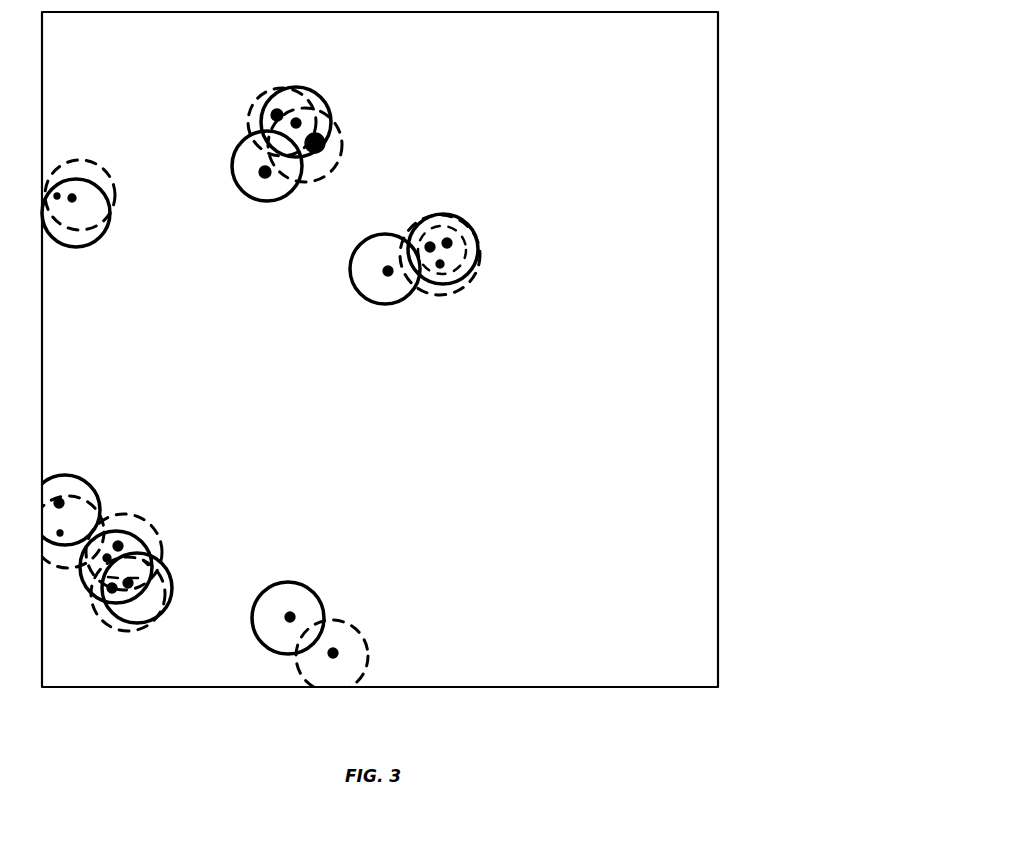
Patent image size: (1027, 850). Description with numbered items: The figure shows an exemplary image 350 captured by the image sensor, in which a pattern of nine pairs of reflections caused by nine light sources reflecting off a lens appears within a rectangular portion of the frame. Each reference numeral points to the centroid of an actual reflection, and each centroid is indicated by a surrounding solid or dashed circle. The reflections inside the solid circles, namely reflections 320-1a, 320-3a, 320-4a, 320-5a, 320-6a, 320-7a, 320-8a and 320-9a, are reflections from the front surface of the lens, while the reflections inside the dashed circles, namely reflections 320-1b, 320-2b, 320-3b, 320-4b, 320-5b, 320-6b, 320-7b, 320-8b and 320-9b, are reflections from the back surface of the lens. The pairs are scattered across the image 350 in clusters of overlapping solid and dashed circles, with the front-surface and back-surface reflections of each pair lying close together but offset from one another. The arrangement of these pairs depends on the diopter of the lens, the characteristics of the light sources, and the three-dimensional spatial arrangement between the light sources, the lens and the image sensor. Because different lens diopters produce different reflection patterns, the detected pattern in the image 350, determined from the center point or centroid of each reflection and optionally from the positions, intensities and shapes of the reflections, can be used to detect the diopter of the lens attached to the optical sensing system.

The reflection from the front surface of the lens 320-1a is at (388, 275).
The reflection from the back surface of the lens 320-1b is at (477, 258).
The reflection from the back surface of the lens 320-2b is at (430, 213).
The reflection from the front surface of the lens 320-3a is at (312, 108).
The reflection from the back surface of the lens 320-3b is at (335, 141).
The reflection from the front surface of the lens 320-4a is at (265, 178).
The reflection from the back surface of the lens 320-4b is at (252, 108).
The reflection from the front surface of the lens 320-5a is at (76, 198).
The reflection from the back surface of the lens 320-5b is at (55, 187).
The reflection from the front surface of the lens 320-6a is at (60, 502).
The reflection from the back surface of the lens 320-6b is at (62, 533).
The reflection from the front surface of the lens 320-7a is at (118, 545).
The reflection from the back surface of the lens 320-7b is at (158, 535).
The reflection from the front surface of the lens 320-8a is at (130, 587).
The reflection from the back surface of the lens 320-8b is at (105, 618).
The reflection from the front surface of the lens 320-9a is at (289, 617).
The reflection from the back surface of the lens 320-9b is at (336, 653).
The image 350 is at (727, 228).